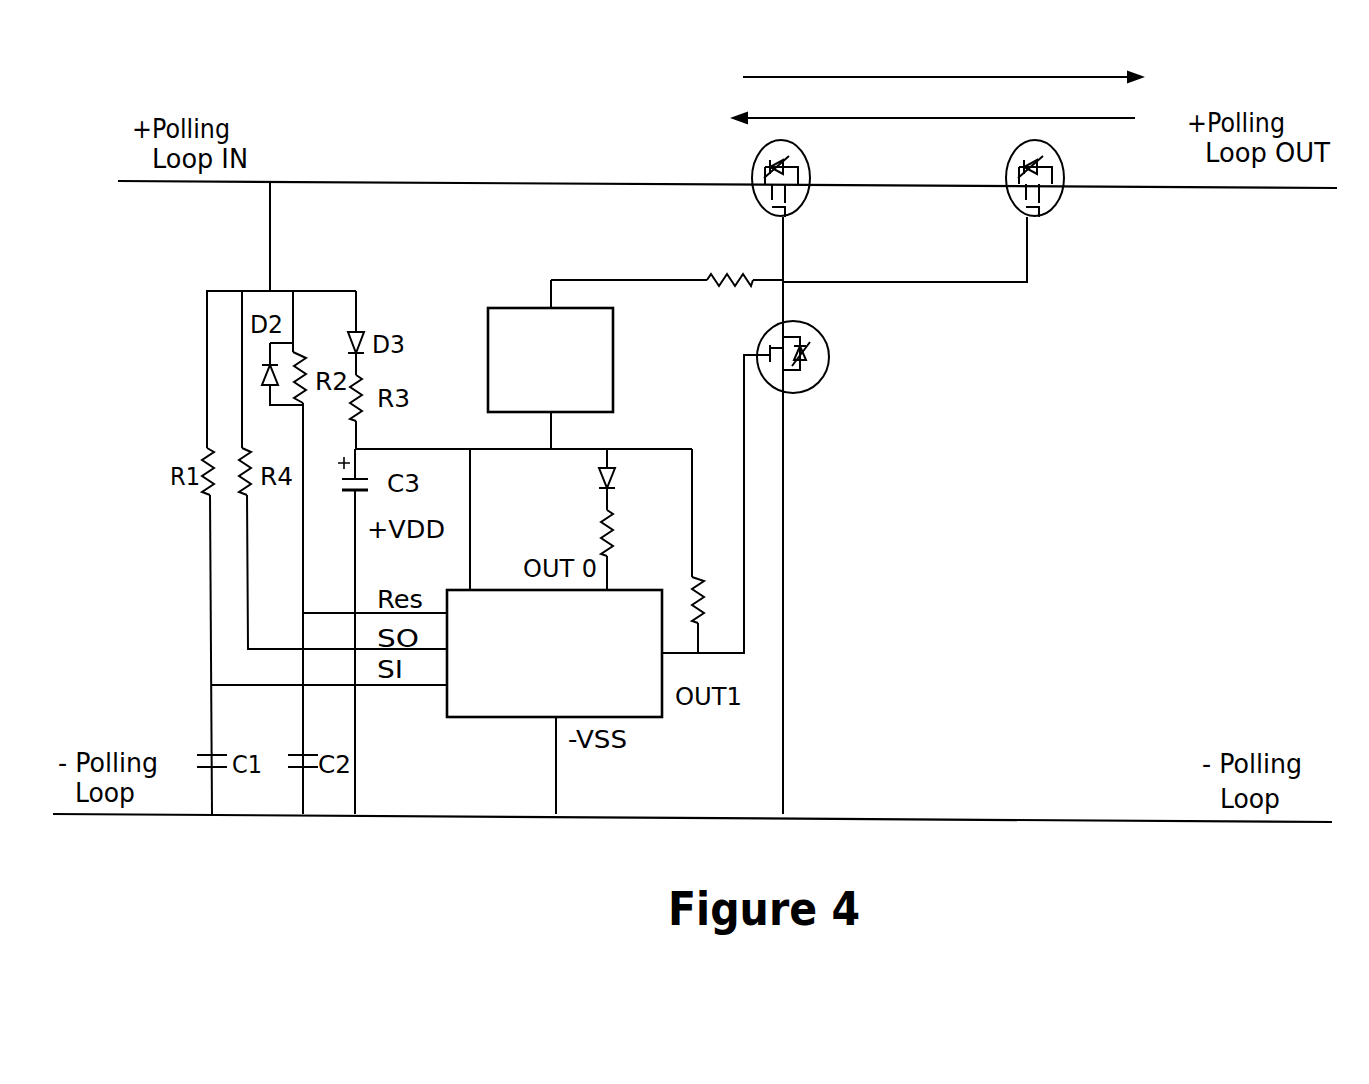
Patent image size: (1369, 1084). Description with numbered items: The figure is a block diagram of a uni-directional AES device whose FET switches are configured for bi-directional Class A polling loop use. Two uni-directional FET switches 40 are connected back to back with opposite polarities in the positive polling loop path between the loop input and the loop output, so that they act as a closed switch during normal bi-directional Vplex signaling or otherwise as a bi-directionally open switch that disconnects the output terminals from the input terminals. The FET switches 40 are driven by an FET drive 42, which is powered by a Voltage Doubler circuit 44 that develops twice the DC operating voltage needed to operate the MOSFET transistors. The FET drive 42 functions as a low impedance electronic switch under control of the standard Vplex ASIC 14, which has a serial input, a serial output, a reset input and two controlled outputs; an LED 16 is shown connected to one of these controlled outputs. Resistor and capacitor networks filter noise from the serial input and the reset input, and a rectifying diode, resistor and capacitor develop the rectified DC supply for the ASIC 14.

The standard Vplex ASIC 14 is at (481, 718).
The LED 16 is at (597, 479).
The uni-directional FET switch 40 is at (808, 163).
The FET drive 42 is at (830, 346).
The Voltage Doubler circuit 44 is at (614, 344).